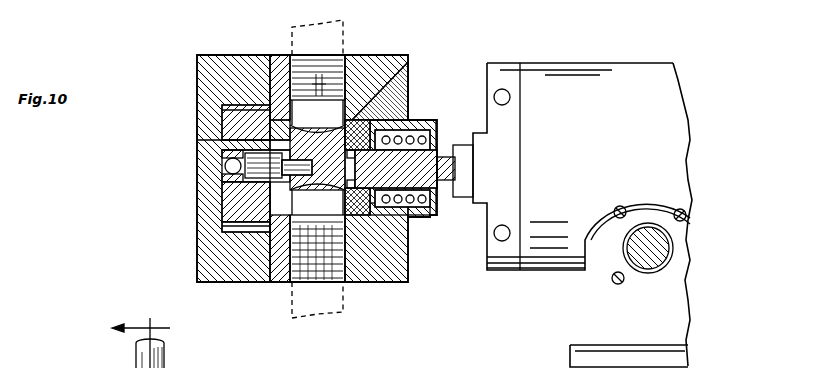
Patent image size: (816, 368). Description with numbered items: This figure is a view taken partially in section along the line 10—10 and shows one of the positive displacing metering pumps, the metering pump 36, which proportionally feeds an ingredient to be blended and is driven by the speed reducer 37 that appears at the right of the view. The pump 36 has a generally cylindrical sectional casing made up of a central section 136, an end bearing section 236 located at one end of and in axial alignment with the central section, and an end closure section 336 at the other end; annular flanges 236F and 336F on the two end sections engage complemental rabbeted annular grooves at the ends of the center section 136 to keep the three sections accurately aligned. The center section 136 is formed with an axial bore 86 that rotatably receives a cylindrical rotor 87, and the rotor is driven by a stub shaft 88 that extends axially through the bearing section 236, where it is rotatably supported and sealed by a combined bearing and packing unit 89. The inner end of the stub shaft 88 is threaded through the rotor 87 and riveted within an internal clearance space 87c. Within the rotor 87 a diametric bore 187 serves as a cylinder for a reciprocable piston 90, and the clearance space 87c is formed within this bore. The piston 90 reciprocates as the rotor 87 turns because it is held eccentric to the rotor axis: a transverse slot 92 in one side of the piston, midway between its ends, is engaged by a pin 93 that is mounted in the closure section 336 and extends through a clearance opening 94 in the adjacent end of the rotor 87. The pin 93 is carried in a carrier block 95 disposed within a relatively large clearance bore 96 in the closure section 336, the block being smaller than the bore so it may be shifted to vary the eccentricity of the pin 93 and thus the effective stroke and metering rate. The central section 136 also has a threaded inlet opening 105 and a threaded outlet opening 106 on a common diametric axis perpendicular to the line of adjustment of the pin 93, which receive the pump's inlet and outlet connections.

The section line 10 is at (134, 338).
The metering pump 36 is at (348, 283).
The speed reducer 37 is at (549, 62).
The axial bore 86 is at (352, 112).
The rotor 87 is at (360, 130).
The internal clearance space 87c is at (392, 128).
The stub shaft 88 is at (440, 165).
The combined bearing and packing unit 89 is at (430, 217).
The piston 90 is at (343, 118).
The transverse slot 92 is at (292, 197).
The pin 93 is at (298, 165).
The clearance opening 94 is at (255, 137).
The carrier block 95 is at (236, 114).
The clearance bore 96 is at (235, 234).
The threaded inlet opening 105 is at (325, 284).
The threaded outlet opening 106 is at (288, 74).
The central section 136 is at (287, 284).
The diametric bore 187 is at (240, 197).
The end bearing section 236 is at (410, 256).
The annular flange 236F is at (372, 284).
The end closure section 336 is at (215, 262).
The annular flange 336F is at (272, 284).